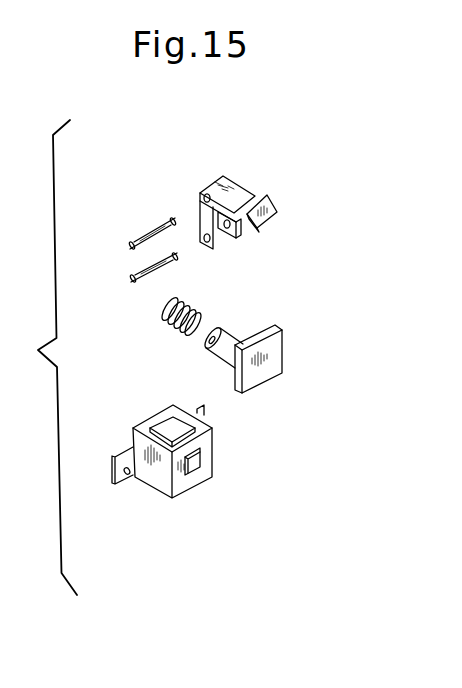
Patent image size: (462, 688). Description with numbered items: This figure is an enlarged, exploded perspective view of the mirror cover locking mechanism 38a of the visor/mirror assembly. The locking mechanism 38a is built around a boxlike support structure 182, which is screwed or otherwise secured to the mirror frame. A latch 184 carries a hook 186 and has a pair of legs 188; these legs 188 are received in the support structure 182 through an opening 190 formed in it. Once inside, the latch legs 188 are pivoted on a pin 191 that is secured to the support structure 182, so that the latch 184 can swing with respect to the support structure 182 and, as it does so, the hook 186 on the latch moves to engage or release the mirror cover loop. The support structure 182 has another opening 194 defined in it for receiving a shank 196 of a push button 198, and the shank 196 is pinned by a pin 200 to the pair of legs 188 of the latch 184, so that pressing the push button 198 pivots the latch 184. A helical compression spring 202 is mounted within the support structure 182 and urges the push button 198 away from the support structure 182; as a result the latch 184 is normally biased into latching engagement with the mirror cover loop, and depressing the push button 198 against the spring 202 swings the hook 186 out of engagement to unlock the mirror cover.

The mirror cover locking mechanism 38a is at (332, 290).
The boxlike support structure 182 is at (205, 472).
The latch 184 is at (274, 184).
The hook 186 is at (263, 208).
The legs 188 is at (226, 237).
The opening 190 is at (176, 420).
The pin 191 is at (149, 232).
The opening 194 is at (203, 460).
The shank 196 is at (228, 323).
The push button 198 is at (270, 362).
The pin 200 is at (145, 268).
The helical compression spring 202 is at (167, 327).